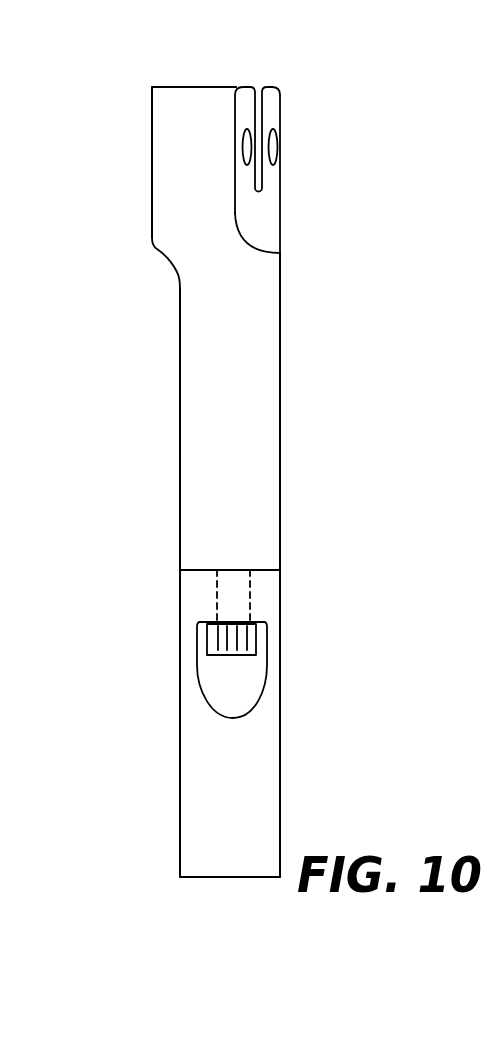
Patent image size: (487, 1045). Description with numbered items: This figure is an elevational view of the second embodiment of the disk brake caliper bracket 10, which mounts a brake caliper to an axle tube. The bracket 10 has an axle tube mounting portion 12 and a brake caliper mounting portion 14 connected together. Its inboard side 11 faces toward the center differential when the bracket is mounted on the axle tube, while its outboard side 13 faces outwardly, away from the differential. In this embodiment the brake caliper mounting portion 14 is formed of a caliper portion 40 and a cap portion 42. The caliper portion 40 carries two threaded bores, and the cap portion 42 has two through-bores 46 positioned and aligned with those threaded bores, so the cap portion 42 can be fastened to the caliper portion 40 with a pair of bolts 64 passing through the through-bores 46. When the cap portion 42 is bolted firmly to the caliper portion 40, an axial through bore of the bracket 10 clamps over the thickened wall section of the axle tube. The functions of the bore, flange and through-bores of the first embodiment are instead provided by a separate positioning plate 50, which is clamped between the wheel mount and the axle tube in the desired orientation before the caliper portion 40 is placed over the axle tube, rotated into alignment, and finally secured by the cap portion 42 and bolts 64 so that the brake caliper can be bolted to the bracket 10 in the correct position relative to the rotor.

The disk brake caliper bracket 10 is at (217, 84).
The brake caliper mounting portion 14 is at (170, 135).
The axle tube mounting portion 12 is at (257, 353).
The inboard side 11 is at (180, 392).
The outboard side 13 is at (280, 387).
The caliper portion 40 is at (242, 525).
The through-bores 46 is at (253, 603).
The cap portion 42 is at (273, 675).
The bolts 64 is at (250, 643).
The positioning plate 50 is at (478, 443).